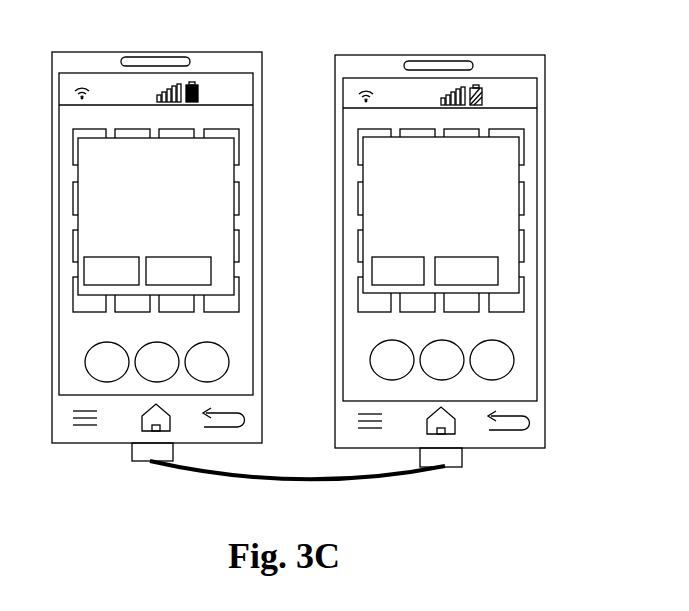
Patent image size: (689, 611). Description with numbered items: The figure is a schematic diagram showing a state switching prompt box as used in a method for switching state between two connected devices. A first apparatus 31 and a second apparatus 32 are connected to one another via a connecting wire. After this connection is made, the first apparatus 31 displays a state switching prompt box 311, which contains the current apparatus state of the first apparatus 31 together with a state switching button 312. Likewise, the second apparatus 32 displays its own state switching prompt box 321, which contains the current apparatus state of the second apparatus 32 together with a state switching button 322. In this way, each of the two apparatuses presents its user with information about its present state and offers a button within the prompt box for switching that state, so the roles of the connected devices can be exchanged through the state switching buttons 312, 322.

The first apparatus 31 is at (262, 64).
The state switching prompt box 311 is at (234, 177).
The state switching button 312 is at (211, 272).
The second apparatus 32 is at (545, 68).
The state switching prompt box 321 is at (519, 177).
The state switching button 322 is at (498, 272).